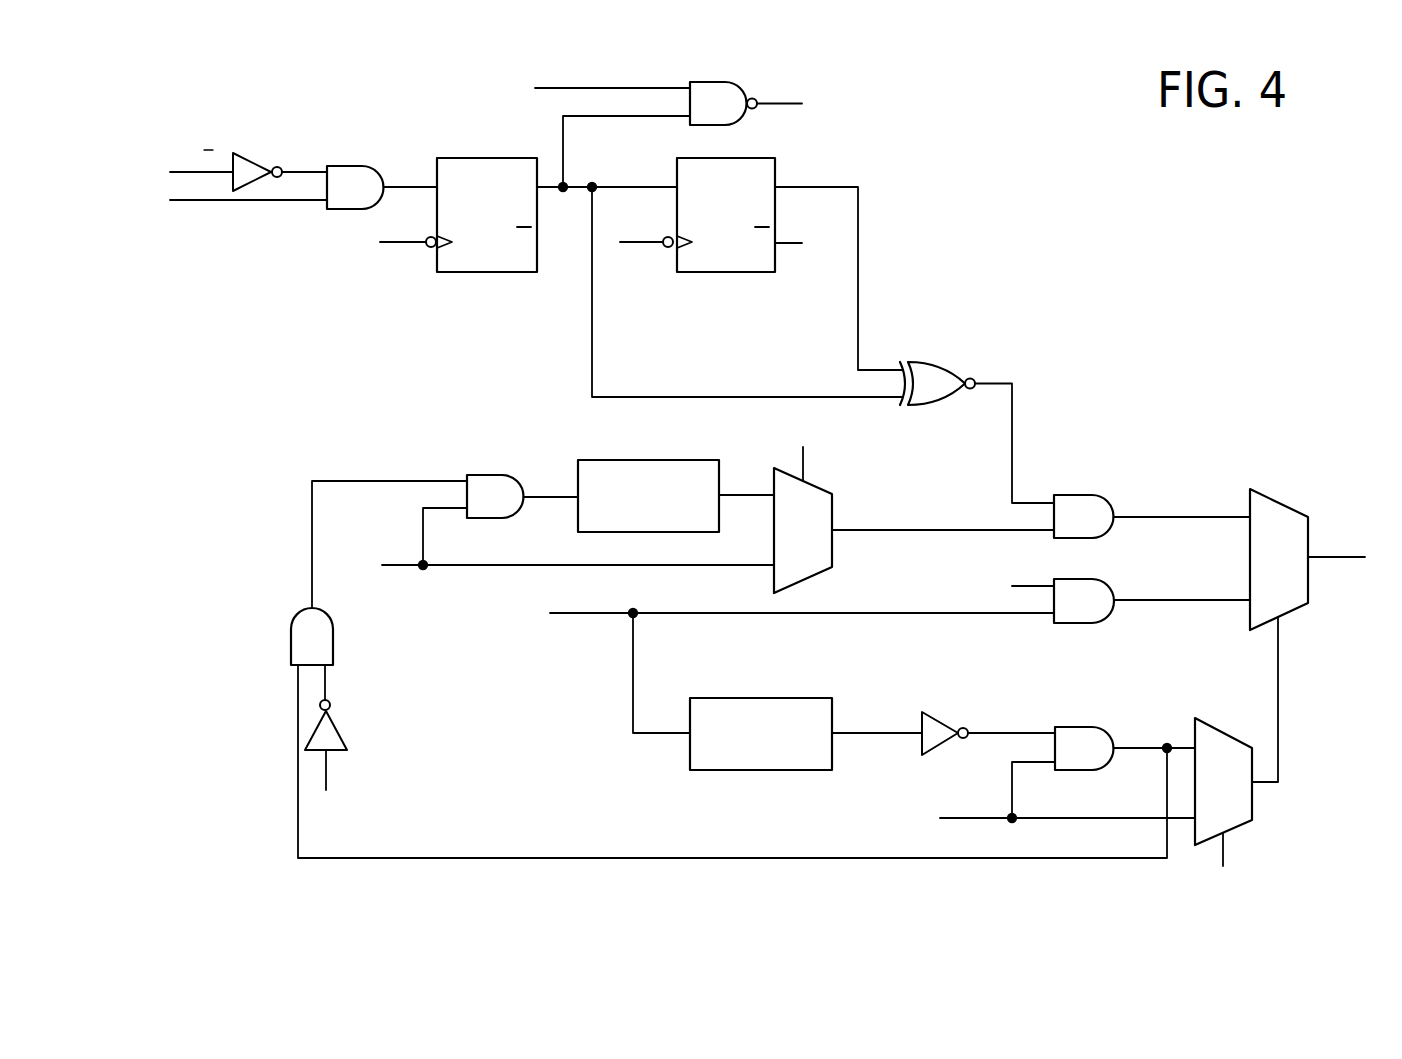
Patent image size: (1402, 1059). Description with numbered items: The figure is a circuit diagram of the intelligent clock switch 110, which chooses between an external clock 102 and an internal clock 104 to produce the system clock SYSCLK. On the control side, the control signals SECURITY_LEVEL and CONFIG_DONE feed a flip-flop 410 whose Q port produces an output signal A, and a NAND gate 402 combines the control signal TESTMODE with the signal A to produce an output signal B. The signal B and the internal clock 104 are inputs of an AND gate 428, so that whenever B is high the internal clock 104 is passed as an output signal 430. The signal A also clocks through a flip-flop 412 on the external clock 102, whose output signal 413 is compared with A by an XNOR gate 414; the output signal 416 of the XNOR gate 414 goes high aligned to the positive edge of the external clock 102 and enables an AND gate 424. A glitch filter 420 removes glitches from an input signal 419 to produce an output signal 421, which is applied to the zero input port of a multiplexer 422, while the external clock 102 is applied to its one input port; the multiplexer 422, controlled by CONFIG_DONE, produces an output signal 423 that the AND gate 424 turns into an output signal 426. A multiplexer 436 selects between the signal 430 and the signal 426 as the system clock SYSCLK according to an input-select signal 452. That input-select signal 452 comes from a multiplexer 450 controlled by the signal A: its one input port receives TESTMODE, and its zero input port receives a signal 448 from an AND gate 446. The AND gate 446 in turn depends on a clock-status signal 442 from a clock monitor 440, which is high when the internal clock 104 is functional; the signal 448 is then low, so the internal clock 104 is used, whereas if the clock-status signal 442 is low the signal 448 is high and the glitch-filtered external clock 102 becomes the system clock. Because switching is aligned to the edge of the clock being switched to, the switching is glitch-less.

The intelligent clock switch 110 is at (1240, 173).
The external clock 102 is at (641, 243).
The internal clock 104 is at (404, 243).
The NAND gate 402 is at (720, 82).
The flip-flop 410 is at (495, 158).
The flip-flop 412 is at (733, 273).
The output signal 413 is at (859, 220).
The XNOR gate 414 is at (925, 362).
The output signal 416 is at (1013, 424).
The input signal 419 is at (535, 497).
The glitch filter 420 is at (672, 460).
The output signal 421 is at (757, 497).
The multiplexer 422 is at (833, 495).
The output signal 423 is at (923, 530).
The AND gate 424 is at (1084, 495).
The output signal 426 is at (1180, 517).
The AND gate 428 is at (1072, 624).
The output signal 430 is at (1180, 600).
The multiplexer 436 is at (1290, 507).
The clock monitor 440 is at (790, 698).
The clock-status signal 442 is at (868, 733).
The AND gate 446 is at (1083, 727).
The signal 448 is at (1135, 748).
The multiplexer 450 is at (1233, 736).
The input-select signal 452 is at (1279, 678).